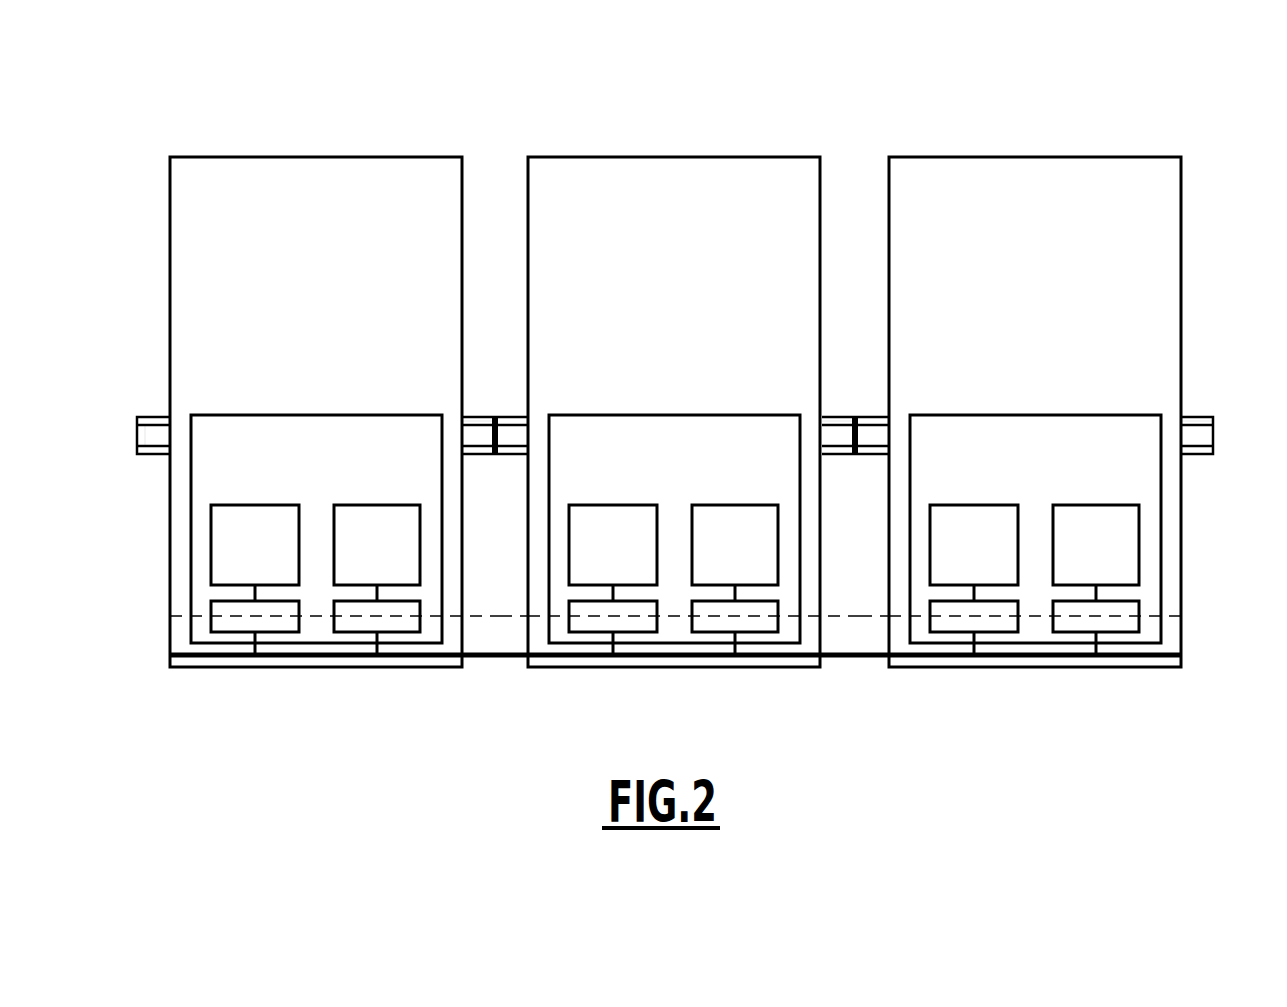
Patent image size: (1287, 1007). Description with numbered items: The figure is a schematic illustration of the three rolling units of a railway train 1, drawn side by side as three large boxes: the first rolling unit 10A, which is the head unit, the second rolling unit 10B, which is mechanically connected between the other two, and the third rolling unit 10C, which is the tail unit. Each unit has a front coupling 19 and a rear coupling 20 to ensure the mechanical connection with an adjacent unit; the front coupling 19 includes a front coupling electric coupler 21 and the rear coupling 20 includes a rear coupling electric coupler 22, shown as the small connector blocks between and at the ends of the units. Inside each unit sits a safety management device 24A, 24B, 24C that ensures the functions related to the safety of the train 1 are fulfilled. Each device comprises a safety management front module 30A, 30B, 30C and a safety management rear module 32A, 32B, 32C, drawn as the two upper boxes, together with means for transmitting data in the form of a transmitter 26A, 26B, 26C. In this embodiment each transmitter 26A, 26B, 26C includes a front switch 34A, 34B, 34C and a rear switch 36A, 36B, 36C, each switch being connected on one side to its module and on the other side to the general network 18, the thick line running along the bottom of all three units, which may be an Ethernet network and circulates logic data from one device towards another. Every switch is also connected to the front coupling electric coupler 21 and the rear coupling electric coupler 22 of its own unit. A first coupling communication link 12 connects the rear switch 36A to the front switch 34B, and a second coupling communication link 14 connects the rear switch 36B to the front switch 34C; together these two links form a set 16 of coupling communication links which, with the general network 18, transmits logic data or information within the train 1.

The railway train 1 is at (140, 128).
The first rolling unit 10A is at (993, 157).
The second rolling unit 10B is at (612, 157).
The third rolling unit 10C is at (362, 157).
The first coupling communication link 12 is at (840, 618).
The second coupling communication link 14 is at (483, 622).
The set of coupling communication links 16 is at (507, 622).
The general network 18 is at (428, 660).
The front coupling 19 is at (1208, 421).
The rear coupling 20 is at (137, 450).
The front coupling electric coupler 21 is at (478, 441).
The rear coupling electric coupler 22 is at (146, 432).
The safety management device 24A is at (1120, 415).
The safety management device 24B is at (595, 415).
The safety management device 24C is at (233, 415).
The transmitter 26A is at (1070, 636).
The transmitter 26B is at (709, 636).
The transmitter 26C is at (351, 636).
The safety management front module 30A is at (1069, 505).
The safety management front module 30B is at (708, 505).
The safety management front module 30C is at (353, 505).
The safety management rear module 32A is at (957, 505).
The safety management rear module 32B is at (597, 505).
The safety management rear module 32C is at (237, 505).
The front switch 34A is at (1127, 633).
The front switch 34B is at (766, 633).
The front switch 34C is at (410, 633).
The rear switch 36A is at (951, 633).
The rear switch 36B is at (591, 633).
The rear switch 36C is at (232, 633).